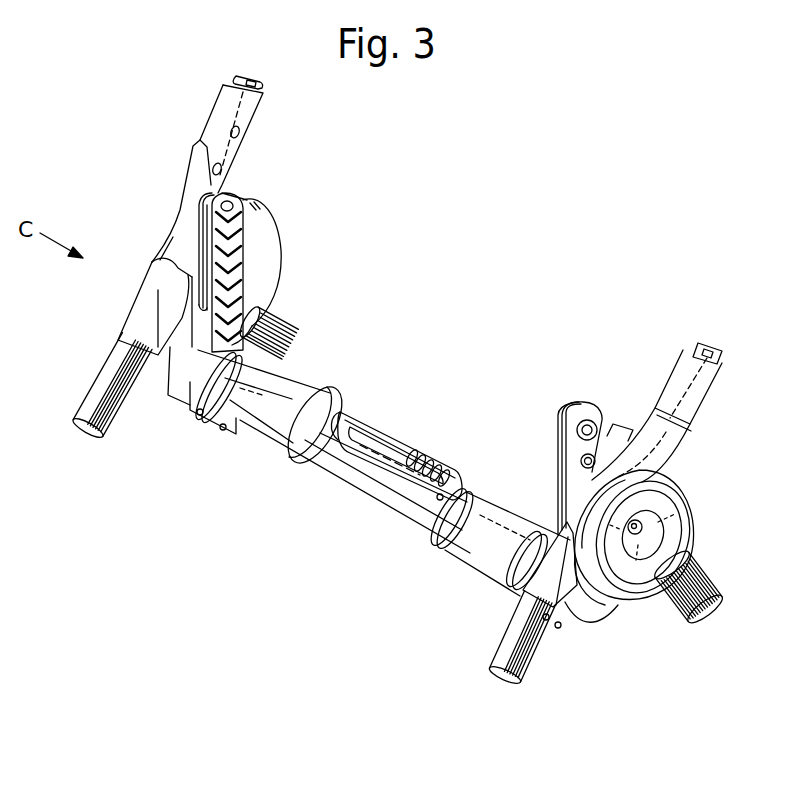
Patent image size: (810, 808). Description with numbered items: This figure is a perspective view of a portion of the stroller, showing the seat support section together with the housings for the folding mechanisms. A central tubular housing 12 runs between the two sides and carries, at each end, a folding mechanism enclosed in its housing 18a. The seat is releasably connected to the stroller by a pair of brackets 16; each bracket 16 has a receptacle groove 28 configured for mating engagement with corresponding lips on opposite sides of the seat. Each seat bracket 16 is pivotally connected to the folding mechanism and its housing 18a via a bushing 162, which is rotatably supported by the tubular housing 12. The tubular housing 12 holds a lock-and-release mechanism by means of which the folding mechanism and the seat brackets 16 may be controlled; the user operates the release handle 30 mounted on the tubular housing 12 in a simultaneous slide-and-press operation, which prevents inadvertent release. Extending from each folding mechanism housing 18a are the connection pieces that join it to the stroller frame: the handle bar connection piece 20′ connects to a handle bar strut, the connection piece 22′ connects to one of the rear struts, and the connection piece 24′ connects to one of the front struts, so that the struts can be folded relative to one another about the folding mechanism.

The tubular housing 12 is at (420, 517).
The bracket 16 is at (243, 240).
The housing 18a is at (262, 265).
The handle bar connection piece 20′ is at (223, 103).
The connection piece 22′ is at (290, 337).
The connection piece 24′ is at (117, 437).
The receptacle groove 28 is at (199, 297).
The release handle 30 is at (397, 448).
The bushing 162 is at (194, 392).